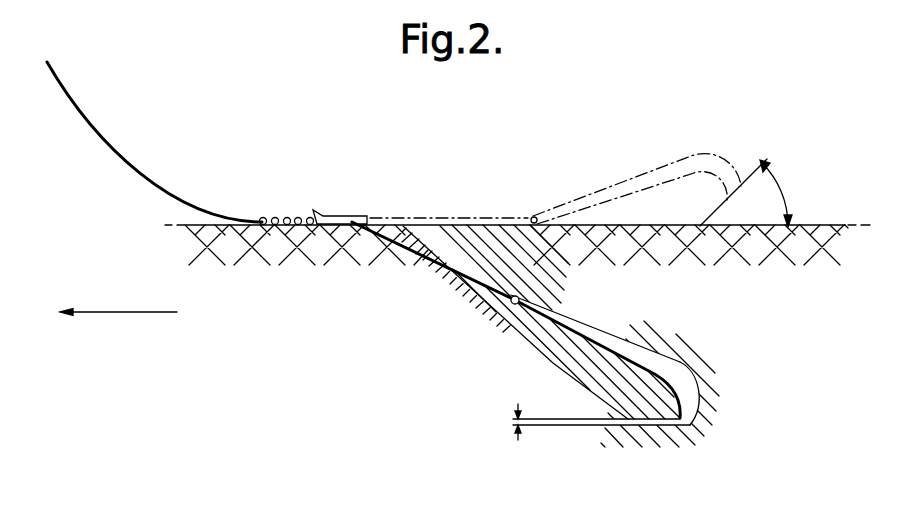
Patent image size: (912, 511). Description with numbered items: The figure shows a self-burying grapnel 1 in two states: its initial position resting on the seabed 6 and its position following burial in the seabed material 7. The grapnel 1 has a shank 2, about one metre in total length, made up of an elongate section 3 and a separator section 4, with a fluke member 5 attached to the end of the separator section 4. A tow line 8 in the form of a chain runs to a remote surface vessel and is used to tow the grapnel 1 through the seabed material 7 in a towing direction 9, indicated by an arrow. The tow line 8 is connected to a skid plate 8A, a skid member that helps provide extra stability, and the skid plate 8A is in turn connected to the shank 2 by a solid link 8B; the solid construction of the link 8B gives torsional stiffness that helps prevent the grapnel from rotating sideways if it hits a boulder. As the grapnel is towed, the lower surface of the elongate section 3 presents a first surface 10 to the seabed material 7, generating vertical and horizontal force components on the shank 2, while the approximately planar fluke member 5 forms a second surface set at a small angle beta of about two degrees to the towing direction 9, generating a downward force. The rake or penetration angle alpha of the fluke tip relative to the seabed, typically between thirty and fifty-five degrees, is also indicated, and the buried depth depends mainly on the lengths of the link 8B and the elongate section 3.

The grapnel 1 is at (724, 369).
The shank 2 is at (515, 306).
The elongate section 3 is at (617, 182).
The separator section 4 is at (699, 397).
The fluke member 5 is at (650, 427).
The seabed 6 is at (833, 225).
The seabed material 7 is at (575, 293).
The tow line 8 is at (95, 125).
The skid plate 8A is at (340, 213).
The solid link 8B is at (395, 246).
The towing direction 9 is at (122, 312).
The first surface 10 is at (583, 343).